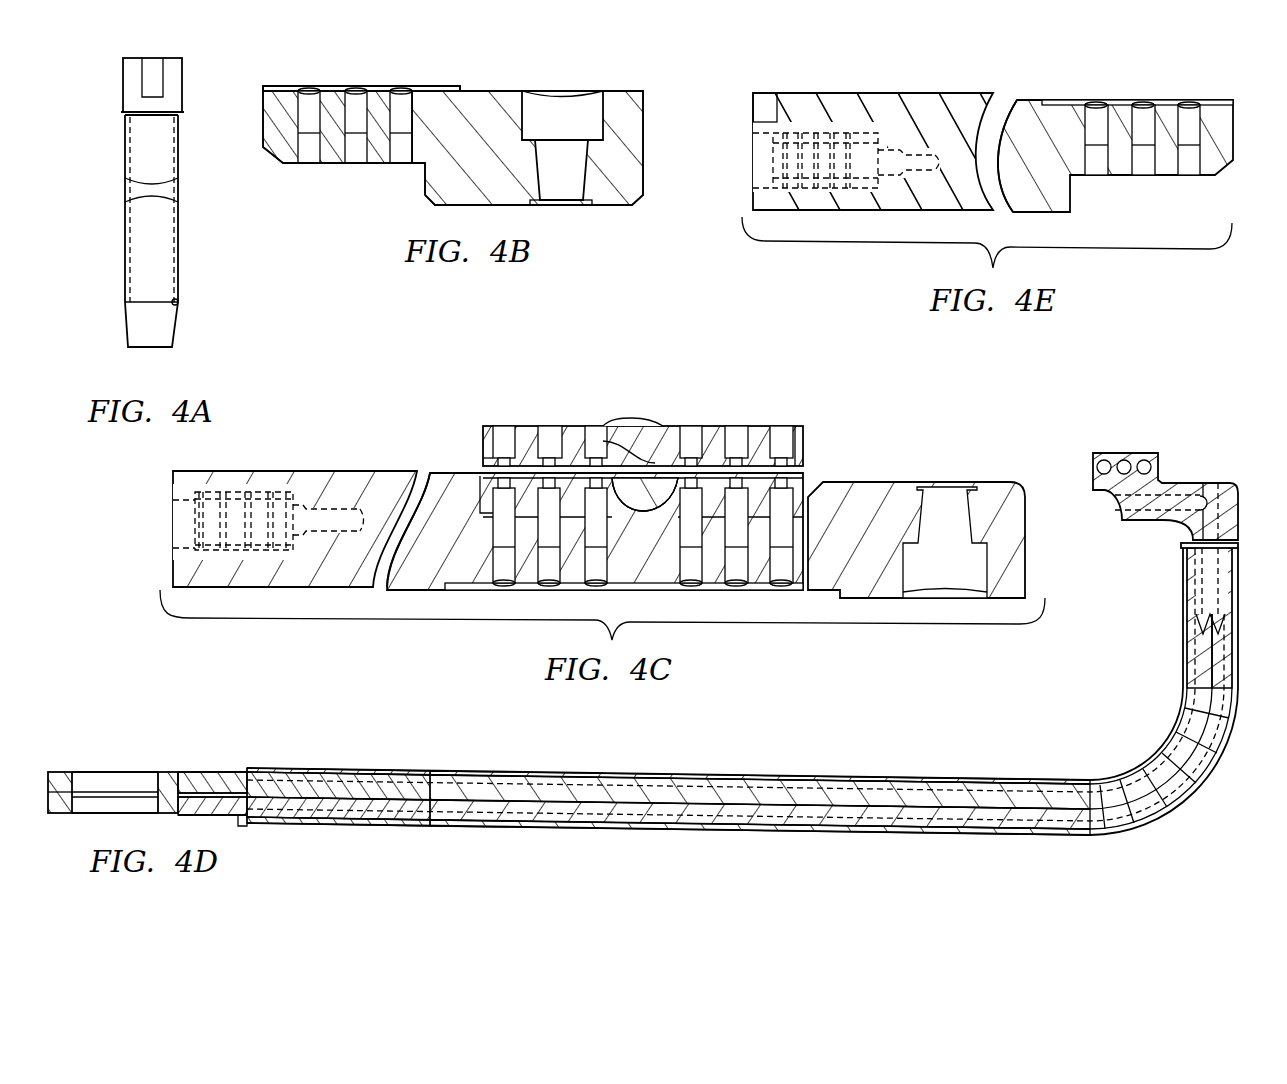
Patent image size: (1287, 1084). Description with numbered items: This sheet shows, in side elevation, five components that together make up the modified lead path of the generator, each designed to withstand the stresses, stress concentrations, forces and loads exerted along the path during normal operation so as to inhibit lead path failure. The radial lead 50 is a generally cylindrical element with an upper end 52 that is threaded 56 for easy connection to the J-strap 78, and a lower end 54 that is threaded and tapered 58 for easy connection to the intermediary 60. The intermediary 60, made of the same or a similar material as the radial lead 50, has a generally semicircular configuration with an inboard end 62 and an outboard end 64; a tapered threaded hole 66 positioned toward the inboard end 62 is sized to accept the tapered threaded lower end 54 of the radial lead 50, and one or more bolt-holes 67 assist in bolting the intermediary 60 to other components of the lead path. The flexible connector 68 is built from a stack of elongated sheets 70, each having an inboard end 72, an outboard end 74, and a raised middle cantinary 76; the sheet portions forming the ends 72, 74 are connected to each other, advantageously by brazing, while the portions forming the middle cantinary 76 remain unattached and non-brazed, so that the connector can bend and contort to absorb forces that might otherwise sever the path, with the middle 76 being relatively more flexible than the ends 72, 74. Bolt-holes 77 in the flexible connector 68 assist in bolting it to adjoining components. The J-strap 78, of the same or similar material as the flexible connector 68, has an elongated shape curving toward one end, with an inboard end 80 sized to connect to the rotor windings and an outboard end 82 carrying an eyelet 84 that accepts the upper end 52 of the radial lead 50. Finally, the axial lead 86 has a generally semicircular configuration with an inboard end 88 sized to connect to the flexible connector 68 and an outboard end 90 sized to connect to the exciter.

In FIG. 4A, the radial lead component 50 is at (154, 199).
In FIG. 4A, the upper end 52 is at (141, 58).
In FIG. 4A, the lower end 54 is at (142, 347).
In FIG. 4A, the threaded 56 is at (123, 94).
In FIG. 4A, the threaded and tapered 58 is at (126, 328).
In FIG. 4B, the intermediary component 60 is at (473, 123).
In FIG. 4B, the inboard end 62 is at (555, 128).
In FIG. 4B, the outboard end 64 is at (354, 102).
In FIG. 4B, the tapered threaded hole 66 is at (567, 183).
In FIG. 4B, the bolt-holes 67 is at (352, 107).
In FIG. 4C, the flexible connector component 68 is at (633, 417).
In FIG. 4C, the elongated sheet 70 is at (488, 430).
In FIG. 4C, the inboard end 72 is at (800, 446).
In FIG. 4C, the outboard end 74 is at (488, 458).
In FIG. 4C, the raised middle cantinary 76 is at (643, 420).
In FIG. 4C, the bolt-holes 77 is at (781, 438).
In FIG. 4D, the J-strap component 78 is at (643, 644).
In FIG. 4D, the inboard end 80 is at (1185, 537).
In FIG. 4D, the outboard end 82 is at (60, 772).
In FIG. 4D, the eyelet 84 is at (136, 772).
In FIG. 4E, the axial lead component 86 is at (944, 110).
In FIG. 4E, the inboard end 88 is at (1235, 123).
In FIG. 4E, the outboard end 90 is at (752, 112).